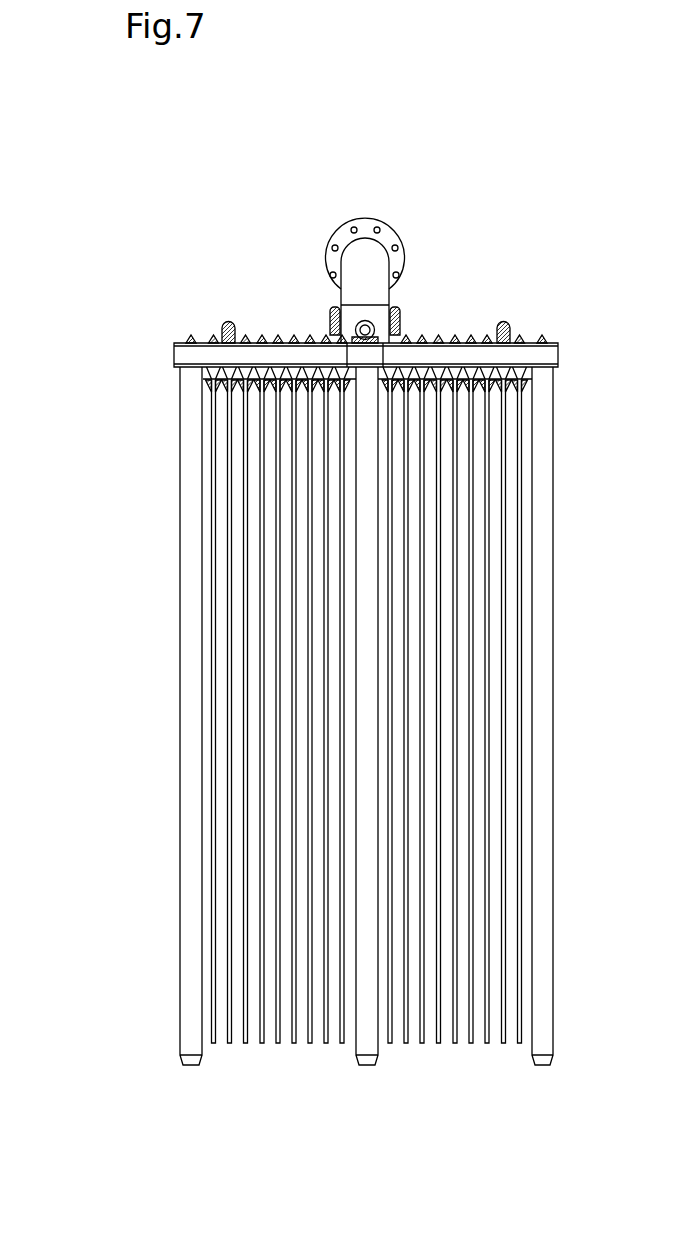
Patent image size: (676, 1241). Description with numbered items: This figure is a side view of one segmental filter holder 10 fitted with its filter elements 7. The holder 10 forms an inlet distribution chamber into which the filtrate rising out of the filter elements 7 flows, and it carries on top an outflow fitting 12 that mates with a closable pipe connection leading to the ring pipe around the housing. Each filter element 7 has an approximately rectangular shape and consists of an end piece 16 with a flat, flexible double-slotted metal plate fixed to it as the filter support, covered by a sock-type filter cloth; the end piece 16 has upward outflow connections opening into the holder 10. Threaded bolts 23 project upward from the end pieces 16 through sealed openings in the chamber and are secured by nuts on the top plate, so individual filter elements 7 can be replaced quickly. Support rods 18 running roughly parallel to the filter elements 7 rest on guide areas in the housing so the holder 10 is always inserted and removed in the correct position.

The segmental filter holder 10 is at (282, 275).
The outflow fitting 12 is at (376, 350).
The threaded bolts 23 is at (469, 336).
The end piece 16 is at (305, 380).
The filter elements 7 is at (283, 484).
The support rods 18 is at (570, 553).